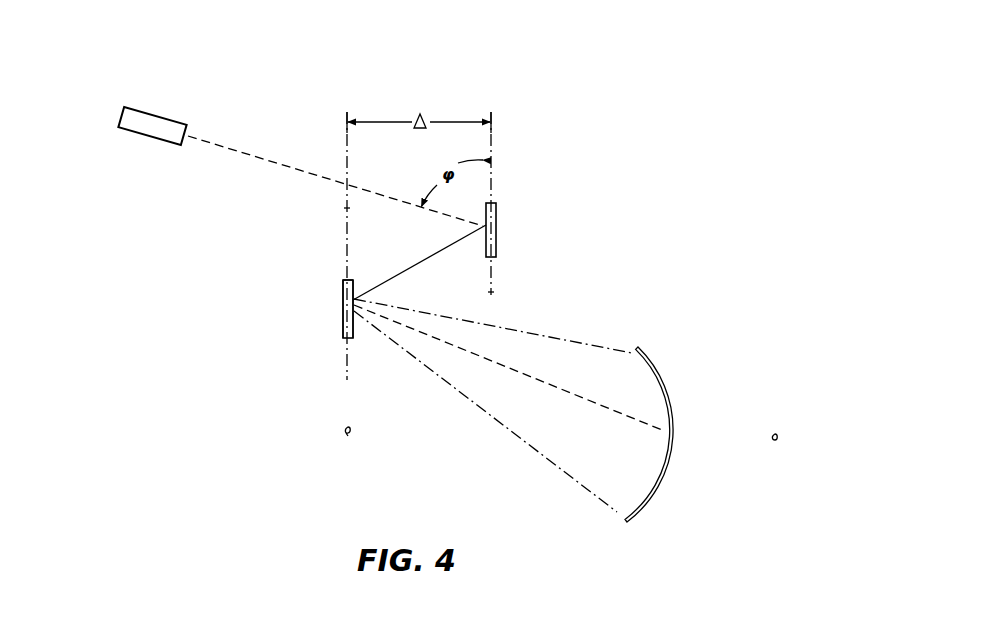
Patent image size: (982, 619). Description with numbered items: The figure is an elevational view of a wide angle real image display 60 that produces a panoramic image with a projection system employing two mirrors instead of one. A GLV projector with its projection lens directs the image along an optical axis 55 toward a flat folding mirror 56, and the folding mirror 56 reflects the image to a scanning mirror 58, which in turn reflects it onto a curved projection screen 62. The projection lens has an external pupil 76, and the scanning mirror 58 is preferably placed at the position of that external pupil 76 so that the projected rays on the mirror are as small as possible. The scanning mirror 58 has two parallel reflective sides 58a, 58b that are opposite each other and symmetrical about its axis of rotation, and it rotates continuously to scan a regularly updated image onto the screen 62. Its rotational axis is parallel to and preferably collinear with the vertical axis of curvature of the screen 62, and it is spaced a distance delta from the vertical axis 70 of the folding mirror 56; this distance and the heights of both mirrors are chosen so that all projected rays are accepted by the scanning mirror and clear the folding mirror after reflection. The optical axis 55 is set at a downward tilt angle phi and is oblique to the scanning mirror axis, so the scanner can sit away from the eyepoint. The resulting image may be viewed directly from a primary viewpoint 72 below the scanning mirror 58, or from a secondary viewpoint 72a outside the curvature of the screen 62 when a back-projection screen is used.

The optical axis 55 is at (243, 153).
The flat folding mirror 56 is at (496, 203).
The scanning mirror 58 is at (342, 308).
The first reflective side 58a is at (343, 326).
The second reflective side 58b is at (355, 331).
The wide angle real image display 60 is at (157, 290).
The curved projection screen 62 is at (660, 370).
The vertical axis of the folding mirror 70 is at (491, 292).
The primary viewpoint 72 is at (345, 433).
The secondary viewpoint 72a is at (778, 440).
The external pupil 76 is at (359, 283).